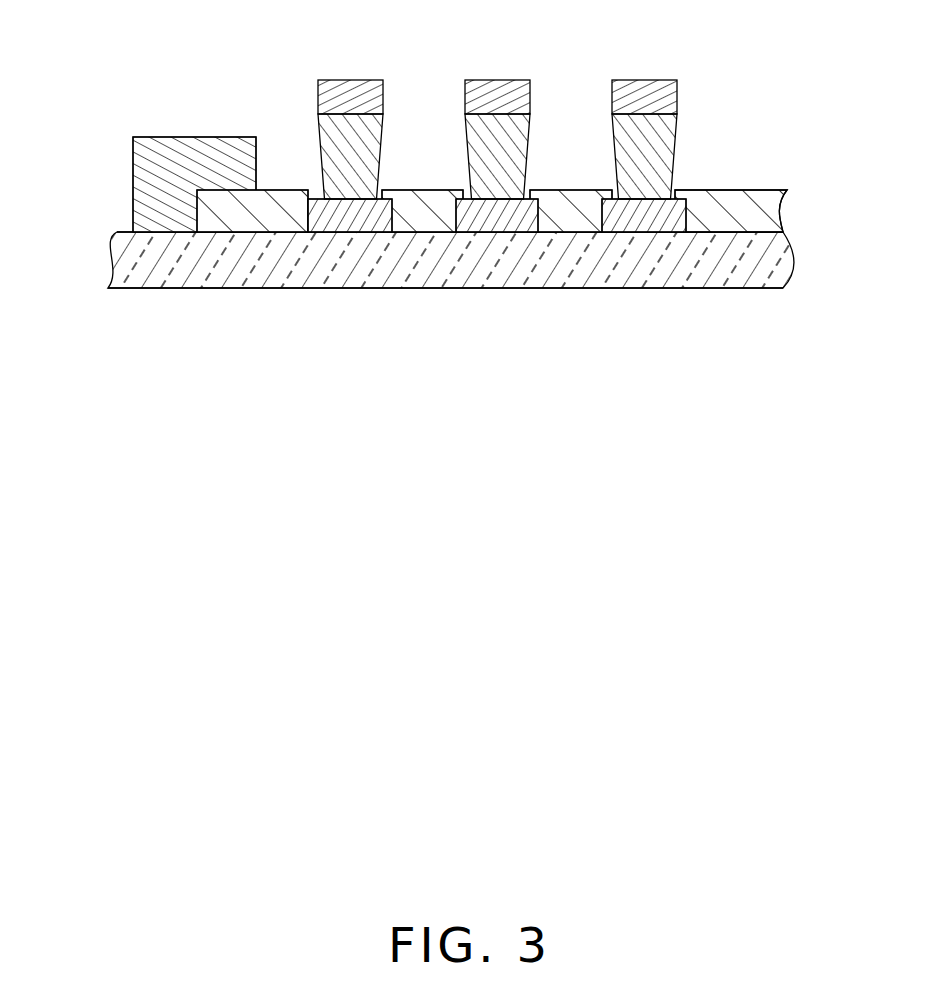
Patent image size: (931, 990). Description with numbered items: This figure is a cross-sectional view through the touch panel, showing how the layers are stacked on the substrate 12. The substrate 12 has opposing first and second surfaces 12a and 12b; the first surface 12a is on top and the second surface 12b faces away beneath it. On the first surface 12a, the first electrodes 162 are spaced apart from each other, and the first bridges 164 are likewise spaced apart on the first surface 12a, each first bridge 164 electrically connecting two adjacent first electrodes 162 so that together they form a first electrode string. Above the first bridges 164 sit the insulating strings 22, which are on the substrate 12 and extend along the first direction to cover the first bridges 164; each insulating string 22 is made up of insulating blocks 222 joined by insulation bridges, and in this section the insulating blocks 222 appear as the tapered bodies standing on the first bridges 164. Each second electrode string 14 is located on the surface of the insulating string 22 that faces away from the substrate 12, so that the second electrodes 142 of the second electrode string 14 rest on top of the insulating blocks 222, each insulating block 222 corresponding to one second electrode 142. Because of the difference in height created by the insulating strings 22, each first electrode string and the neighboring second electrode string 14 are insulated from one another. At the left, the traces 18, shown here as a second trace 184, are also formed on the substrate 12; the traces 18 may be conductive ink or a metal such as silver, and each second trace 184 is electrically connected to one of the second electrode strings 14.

The substrate 12 is at (138, 272).
The first surface 12a is at (120, 226).
The second surface 12b is at (181, 298).
The traces 18 is at (148, 163).
The second trace 184 is at (202, 153).
The first electrode 162 is at (427, 217).
The first bridge 164 is at (357, 220).
The insulating string 22 is at (566, 156).
The insulating block 222 is at (653, 155).
The second electrode string 14 is at (569, 76).
The second electrode 142 is at (643, 93).